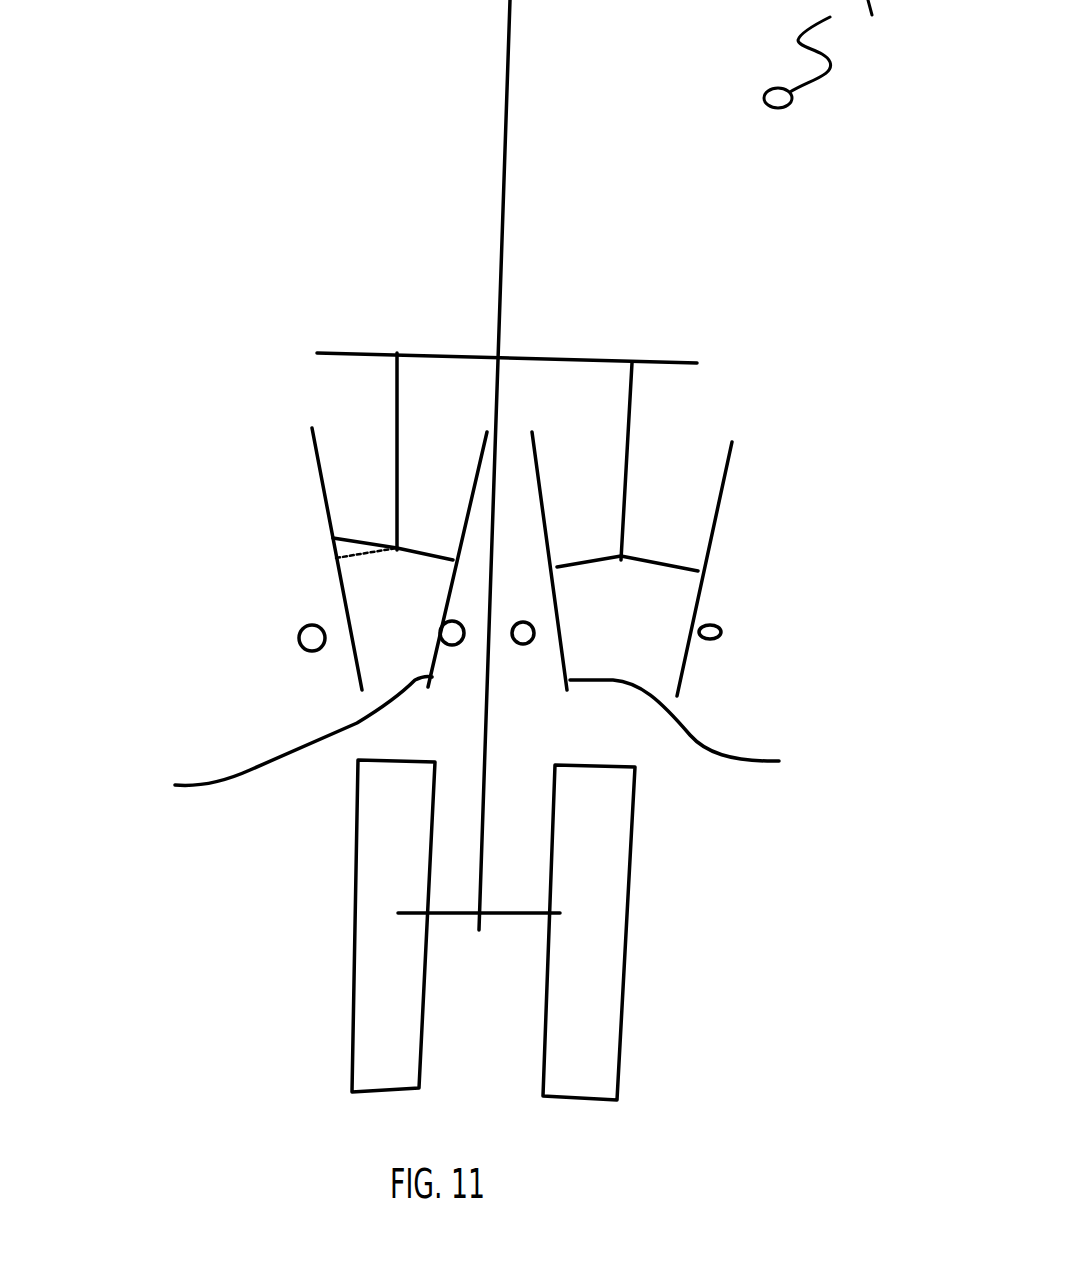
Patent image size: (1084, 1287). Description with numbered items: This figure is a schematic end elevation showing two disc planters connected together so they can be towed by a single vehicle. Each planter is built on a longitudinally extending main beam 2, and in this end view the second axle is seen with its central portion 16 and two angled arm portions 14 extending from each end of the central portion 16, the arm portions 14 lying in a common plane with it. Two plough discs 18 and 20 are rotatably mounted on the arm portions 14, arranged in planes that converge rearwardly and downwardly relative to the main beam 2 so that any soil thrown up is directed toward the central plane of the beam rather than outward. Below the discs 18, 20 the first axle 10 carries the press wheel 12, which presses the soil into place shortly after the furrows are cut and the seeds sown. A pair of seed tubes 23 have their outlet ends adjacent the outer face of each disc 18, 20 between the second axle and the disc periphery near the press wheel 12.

The main beam 2 is at (502, 183).
The first axle 10 is at (504, 913).
The press wheel 12 is at (381, 1001).
The arm portions 14 is at (333, 538).
The central portion 16 is at (405, 393).
The plough disc 18 is at (355, 663).
The plough disc 20 is at (464, 743).
The seed tubes 23 is at (299, 638).